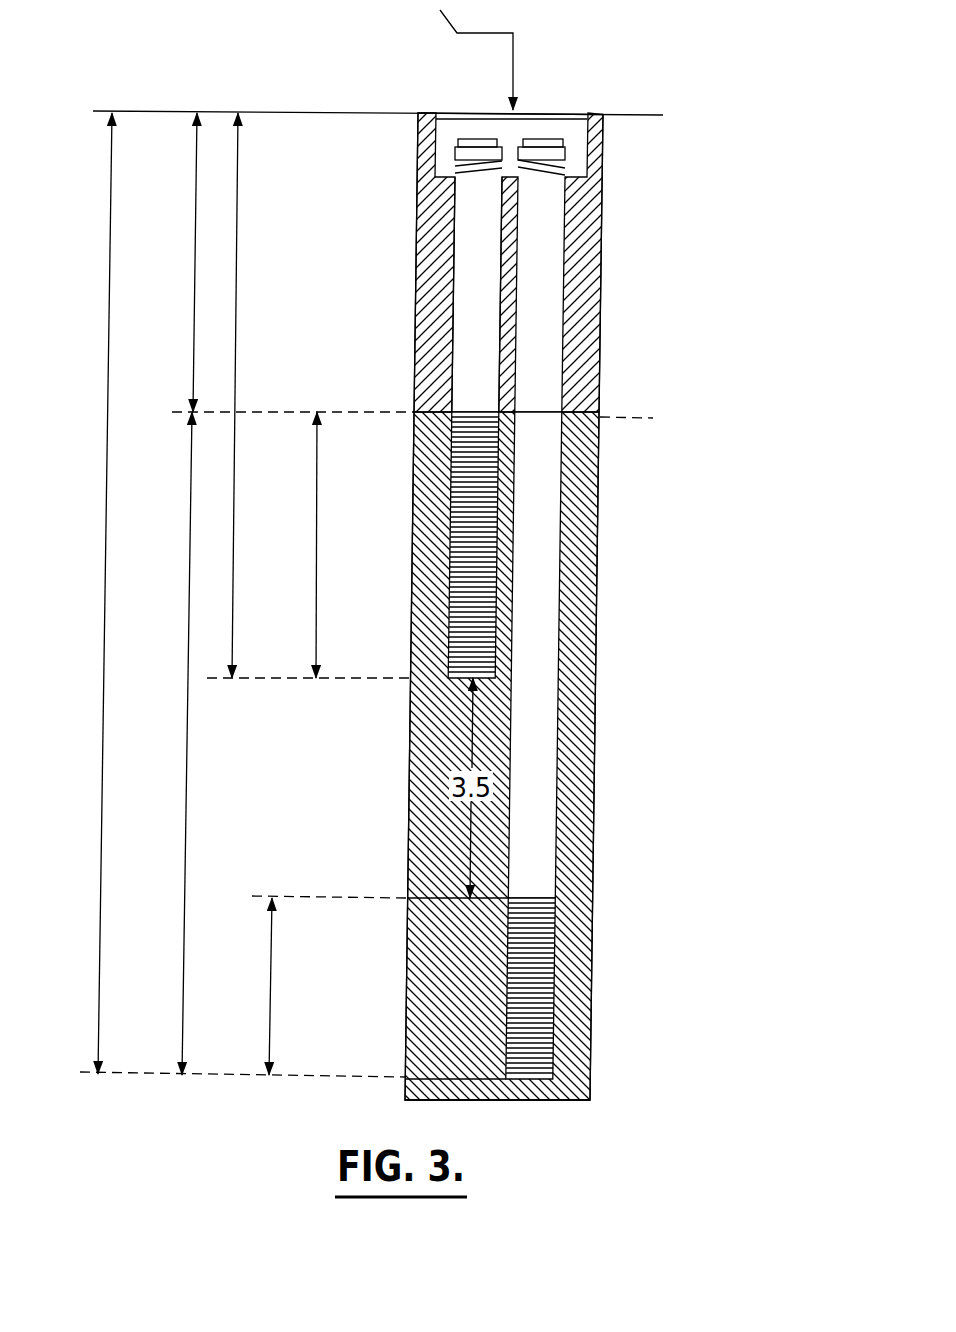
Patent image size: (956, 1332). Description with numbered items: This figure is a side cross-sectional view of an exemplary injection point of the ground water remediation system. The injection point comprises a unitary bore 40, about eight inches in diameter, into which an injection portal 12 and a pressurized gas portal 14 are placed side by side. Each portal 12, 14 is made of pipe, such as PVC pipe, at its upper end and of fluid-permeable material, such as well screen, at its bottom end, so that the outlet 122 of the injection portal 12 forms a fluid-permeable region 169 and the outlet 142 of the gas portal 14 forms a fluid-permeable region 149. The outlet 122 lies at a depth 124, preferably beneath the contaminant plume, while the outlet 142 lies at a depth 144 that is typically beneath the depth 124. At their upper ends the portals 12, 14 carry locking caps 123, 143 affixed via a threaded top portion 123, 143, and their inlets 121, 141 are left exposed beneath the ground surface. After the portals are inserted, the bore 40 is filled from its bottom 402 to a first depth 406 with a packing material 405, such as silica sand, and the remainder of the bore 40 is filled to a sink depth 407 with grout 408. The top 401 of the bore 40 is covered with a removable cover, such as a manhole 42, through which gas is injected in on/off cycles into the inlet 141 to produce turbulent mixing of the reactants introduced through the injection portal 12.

The injection portal 12 is at (436, 294).
The pressurized gas portal 14 is at (582, 655).
The unitary bore 40 is at (465, 606).
The manhole 42 is at (462, 55).
The injection portal inlet 121 is at (450, 119).
The injection portal outlet 122 is at (419, 545).
The locking cap and threaded top portion 123 is at (427, 122).
The depth of injection portal outlet 124 is at (267, 395).
The gas portal inlet 141 is at (594, 115).
The gas portal outlet 142 is at (587, 988).
The locking cap and threaded top portion 143 is at (603, 127).
The depth of gas portal outlet 144 is at (74, 593).
The fluid-permeable region of gas portal 149 is at (310, 986).
The fluid-permeable region of injection portal 169 is at (349, 545).
The top of bore 401 is at (427, 137).
The bottom of bore 402 is at (497, 1126).
The packing material 405 is at (544, 756).
The first depth 406 is at (153, 743).
The sink depth 407 is at (159, 262).
The grout 408 is at (549, 262).